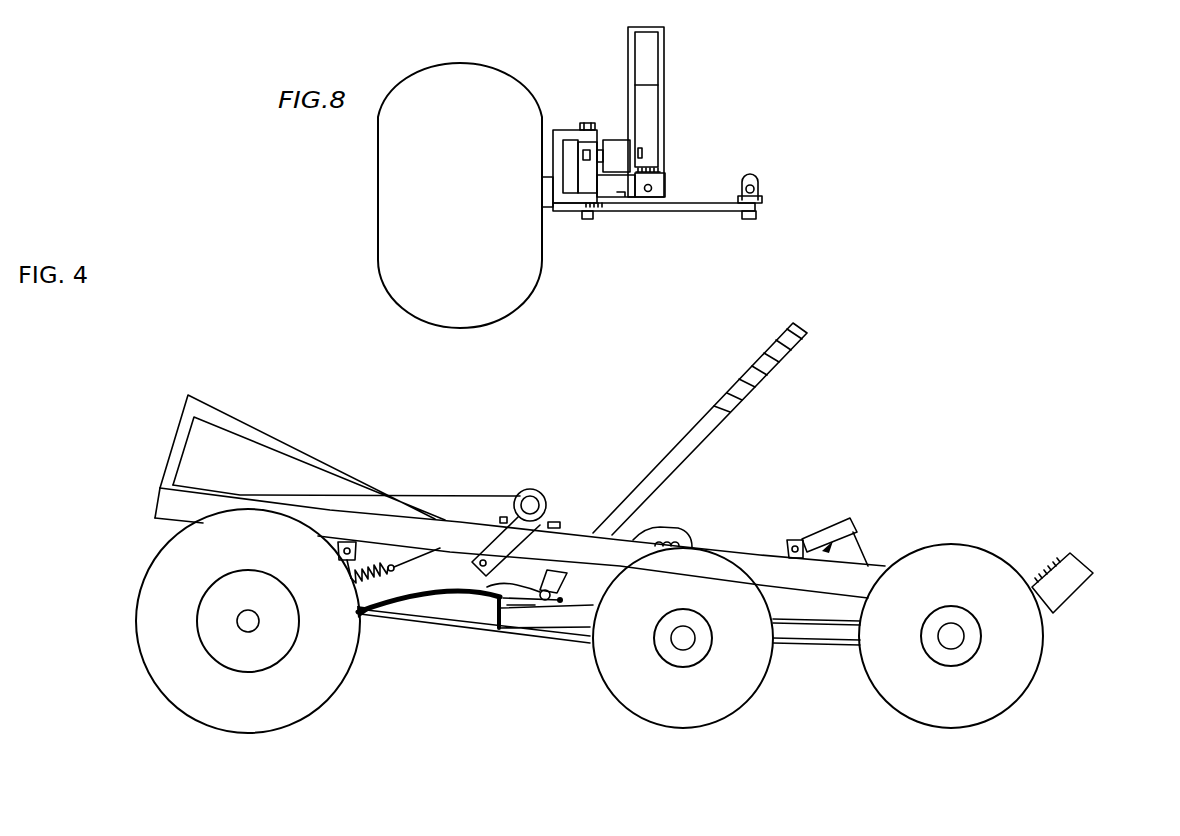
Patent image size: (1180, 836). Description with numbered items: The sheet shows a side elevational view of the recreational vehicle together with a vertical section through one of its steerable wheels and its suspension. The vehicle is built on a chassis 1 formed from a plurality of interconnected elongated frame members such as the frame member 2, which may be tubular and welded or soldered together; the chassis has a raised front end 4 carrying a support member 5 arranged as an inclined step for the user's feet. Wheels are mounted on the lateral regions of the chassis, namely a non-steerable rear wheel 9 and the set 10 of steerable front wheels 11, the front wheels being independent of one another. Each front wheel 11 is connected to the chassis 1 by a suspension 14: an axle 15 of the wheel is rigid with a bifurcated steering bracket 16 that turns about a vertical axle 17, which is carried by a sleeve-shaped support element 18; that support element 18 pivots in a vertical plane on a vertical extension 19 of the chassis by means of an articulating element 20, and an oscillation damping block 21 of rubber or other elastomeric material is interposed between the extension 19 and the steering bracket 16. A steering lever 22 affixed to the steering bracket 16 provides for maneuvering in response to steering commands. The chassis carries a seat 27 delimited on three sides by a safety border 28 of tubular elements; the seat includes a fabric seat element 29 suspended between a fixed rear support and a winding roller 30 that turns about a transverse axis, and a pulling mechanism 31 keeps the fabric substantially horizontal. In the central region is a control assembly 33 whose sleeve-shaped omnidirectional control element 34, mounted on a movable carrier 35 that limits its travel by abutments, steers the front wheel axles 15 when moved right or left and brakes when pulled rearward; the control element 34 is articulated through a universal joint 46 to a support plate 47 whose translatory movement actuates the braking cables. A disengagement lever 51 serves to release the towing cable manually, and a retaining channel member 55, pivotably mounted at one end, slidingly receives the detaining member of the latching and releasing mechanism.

In FIG. 4, the chassis 1 is at (136, 542).
In FIG. 8, the frame member 2 is at (658, 54).
In FIG. 4, the frame member 2 is at (560, 547).
In FIG. 4, the raised front end 4 is at (1104, 591).
In FIG. 4, the support member 5 is at (1060, 553).
In FIG. 4, the rear wheel 9 is at (128, 688).
In FIG. 4, the set of steerable front wheels 10 is at (812, 694).
In FIG. 8, the front wheel 11 is at (408, 229).
In FIG. 4, the front wheel 11 is at (683, 705).
In FIG. 8, the suspension 14 is at (623, 124).
In FIG. 8, the axle 15 is at (575, 178).
In FIG. 8, the bifurcated steering bracket 16 is at (562, 132).
In FIG. 8, the vertical axle 17 is at (588, 123).
In FIG. 8, the support element 18 is at (587, 172).
In FIG. 8, the vertical extension 19 is at (651, 133).
In FIG. 8, the articulating element 20 is at (652, 190).
In FIG. 8, the oscillation damping block 21 is at (622, 158).
In FIG. 8, the steering lever 22 is at (698, 228).
In FIG. 4, the seat 27 is at (238, 461).
In FIG. 4, the safety border 28 is at (167, 431).
In FIG. 4, the fabric seat element 29 is at (470, 490).
In FIG. 4, the winding roller 30 is at (553, 487).
In FIG. 4, the pulling mechanism 31 is at (415, 583).
In FIG. 4, the control assembly 33 is at (778, 418).
In FIG. 4, the control element 34 is at (806, 326).
In FIG. 4, the movable carrier 35 is at (553, 654).
In FIG. 4, the universal joint 46 is at (467, 600).
In FIG. 4, the support plate 47 is at (515, 607).
In FIG. 4, the disengagement lever 51 is at (696, 509).
In FIG. 4, the retaining channel member 55 is at (835, 523).